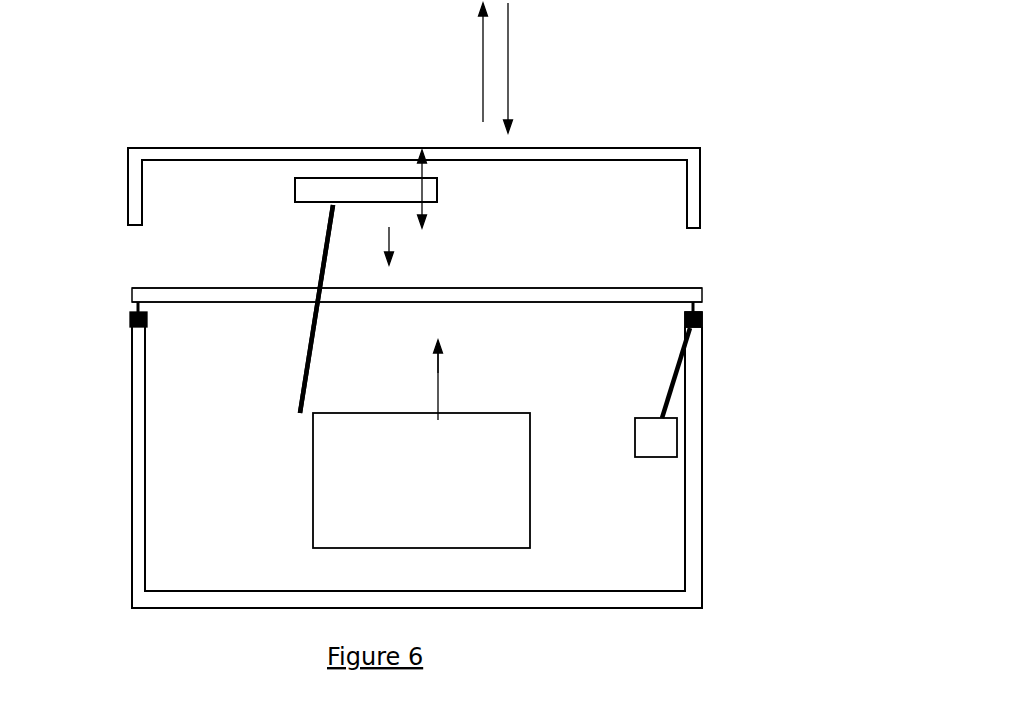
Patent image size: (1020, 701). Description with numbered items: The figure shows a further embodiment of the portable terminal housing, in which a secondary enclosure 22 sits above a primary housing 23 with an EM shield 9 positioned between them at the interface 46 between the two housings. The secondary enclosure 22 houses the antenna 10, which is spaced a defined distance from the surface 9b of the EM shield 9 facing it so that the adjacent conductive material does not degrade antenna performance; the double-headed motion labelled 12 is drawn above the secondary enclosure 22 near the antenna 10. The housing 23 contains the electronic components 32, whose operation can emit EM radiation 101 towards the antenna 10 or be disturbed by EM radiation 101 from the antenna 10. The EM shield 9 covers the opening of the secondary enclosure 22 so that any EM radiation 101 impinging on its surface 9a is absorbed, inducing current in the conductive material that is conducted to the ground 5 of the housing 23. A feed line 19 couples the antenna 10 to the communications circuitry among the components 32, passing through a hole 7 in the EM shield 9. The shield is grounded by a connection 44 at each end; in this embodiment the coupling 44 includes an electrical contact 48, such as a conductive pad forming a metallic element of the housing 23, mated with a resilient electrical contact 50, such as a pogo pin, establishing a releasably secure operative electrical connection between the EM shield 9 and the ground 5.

The ground 5 is at (660, 443).
The hole/slot in the EM shield 7 is at (313, 287).
The EM shield 9 is at (140, 297).
The surface of the EM shield 9a is at (633, 303).
The surface of the EM shield facing the antenna 9b is at (178, 286).
The antenna 10 is at (362, 178).
The drive motion 12 is at (508, 68).
The feed line 19 is at (305, 368).
The secondary enclosure 22 is at (414, 188).
The housing 23 is at (417, 467).
The electronic components 32 is at (421, 444).
The connection 44 is at (116, 329).
The interface between the housings 46 is at (687, 261).
The electrical contact 48 is at (700, 325).
The resilient mating electrical contact 50 is at (702, 303).
The EM radiation 101 is at (438, 373).